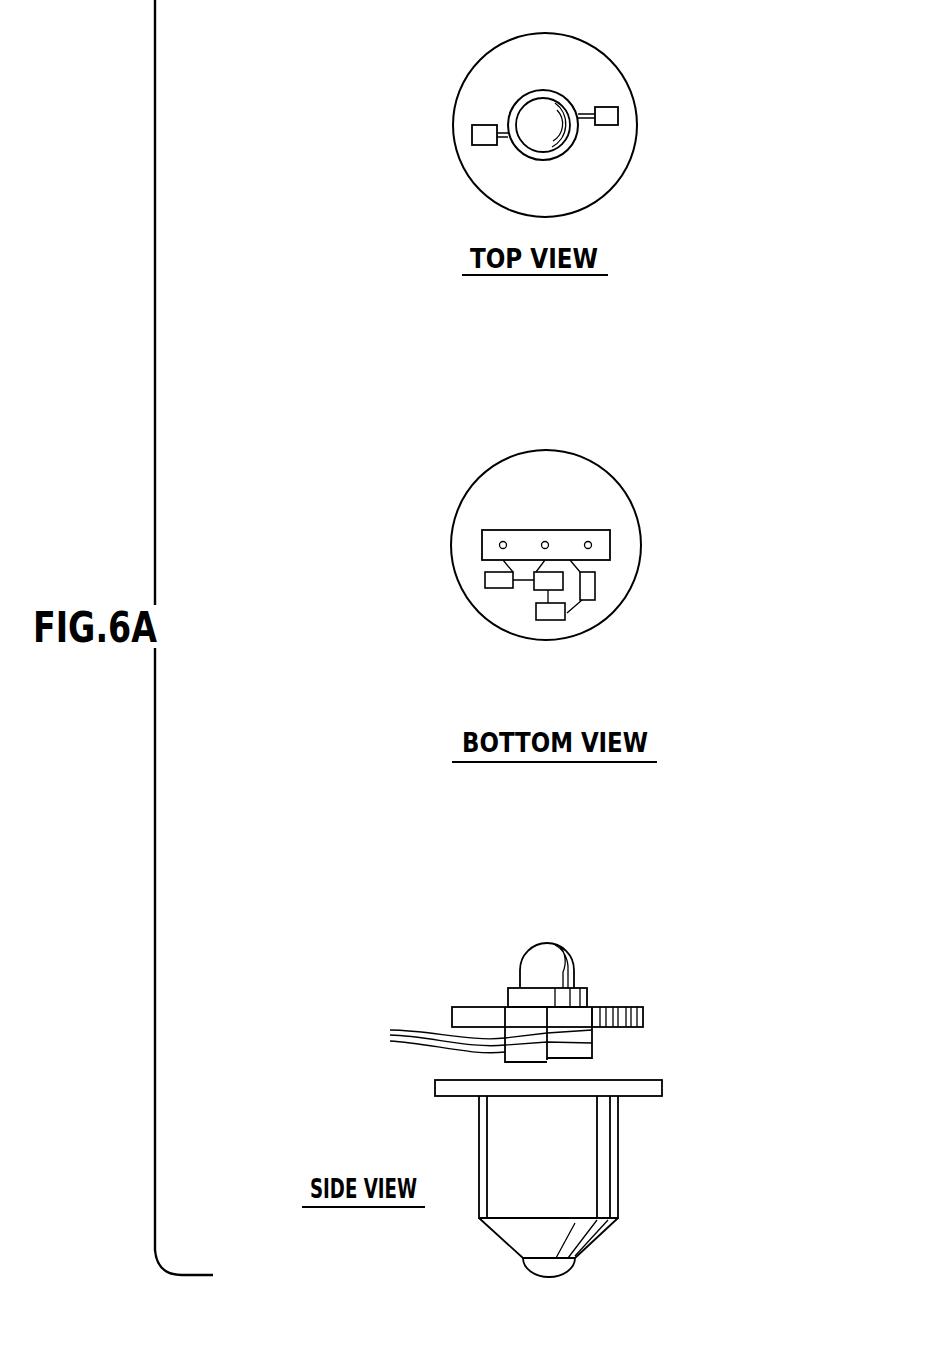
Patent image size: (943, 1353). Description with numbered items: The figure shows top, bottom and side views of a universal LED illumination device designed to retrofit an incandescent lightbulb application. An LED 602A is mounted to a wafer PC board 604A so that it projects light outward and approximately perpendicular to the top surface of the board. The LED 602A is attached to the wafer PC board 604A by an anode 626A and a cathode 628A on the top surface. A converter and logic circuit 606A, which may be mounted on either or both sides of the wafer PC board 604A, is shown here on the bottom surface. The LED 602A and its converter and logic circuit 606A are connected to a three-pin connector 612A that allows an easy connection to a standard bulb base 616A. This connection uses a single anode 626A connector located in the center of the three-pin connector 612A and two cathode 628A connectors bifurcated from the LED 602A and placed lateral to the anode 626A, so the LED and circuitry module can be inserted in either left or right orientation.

The LED 602A is at (540, 115).
The wafer PC board 604A is at (580, 213).
The converter and logic circuit 606A is at (485, 589).
The 3-pin connector 612A is at (587, 530).
The standard bulb base 616A is at (618, 1155).
The anode 626A is at (688, 1082).
The cathode 628A is at (618, 116).